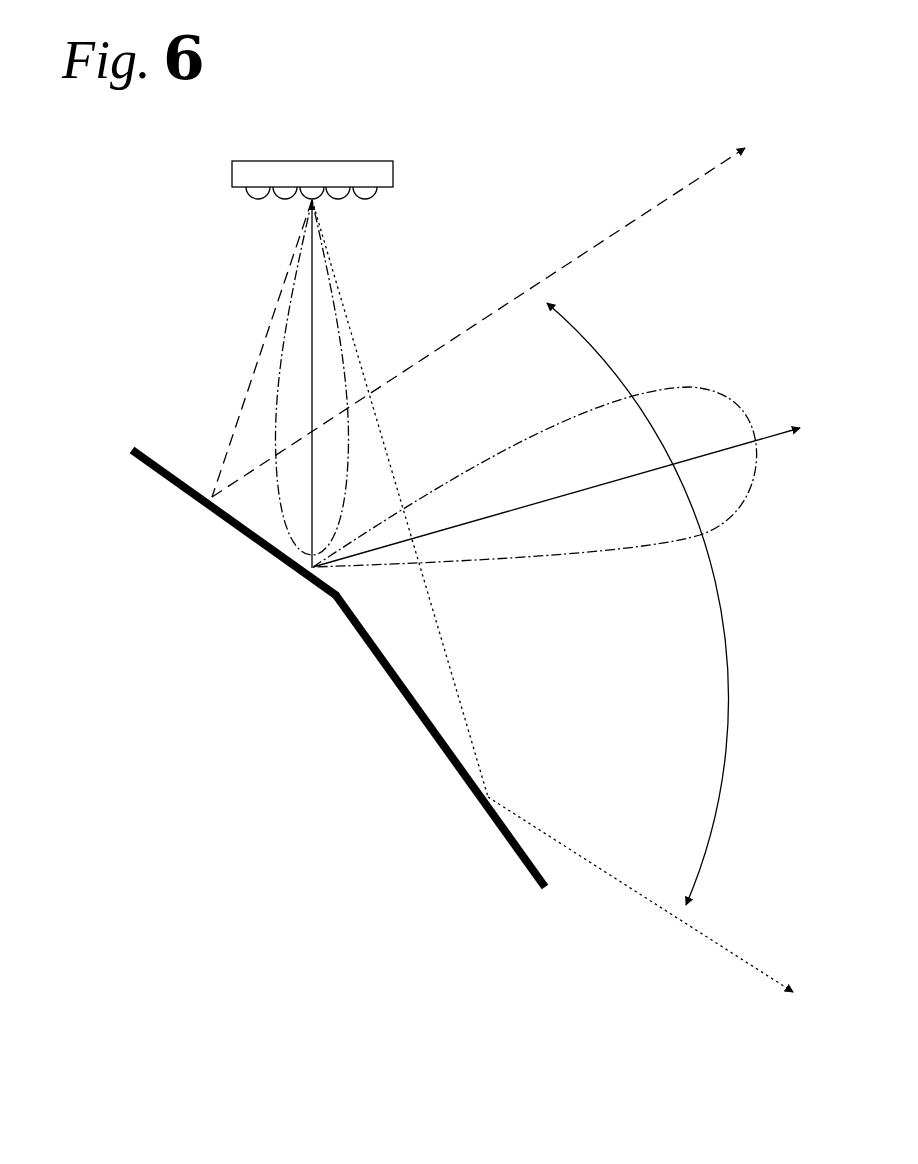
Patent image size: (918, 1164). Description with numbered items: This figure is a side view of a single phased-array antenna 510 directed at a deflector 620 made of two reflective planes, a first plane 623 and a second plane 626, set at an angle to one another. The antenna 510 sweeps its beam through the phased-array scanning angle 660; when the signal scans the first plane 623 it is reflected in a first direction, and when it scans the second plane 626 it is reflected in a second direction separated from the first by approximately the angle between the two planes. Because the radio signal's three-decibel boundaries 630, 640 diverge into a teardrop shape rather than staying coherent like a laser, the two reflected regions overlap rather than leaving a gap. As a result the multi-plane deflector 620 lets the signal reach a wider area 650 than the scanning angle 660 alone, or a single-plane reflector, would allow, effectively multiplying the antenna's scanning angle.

The phased-array antenna 510 is at (232, 176).
The deflector 620 is at (307, 654).
The first plane 623 is at (330, 603).
The second plane 626 is at (533, 891).
The 3 dB boundary 630 is at (350, 452).
The 3 dB boundary 640 is at (575, 557).
The wider area 650 is at (650, 604).
The phased-array scanning angle 660 is at (380, 265).